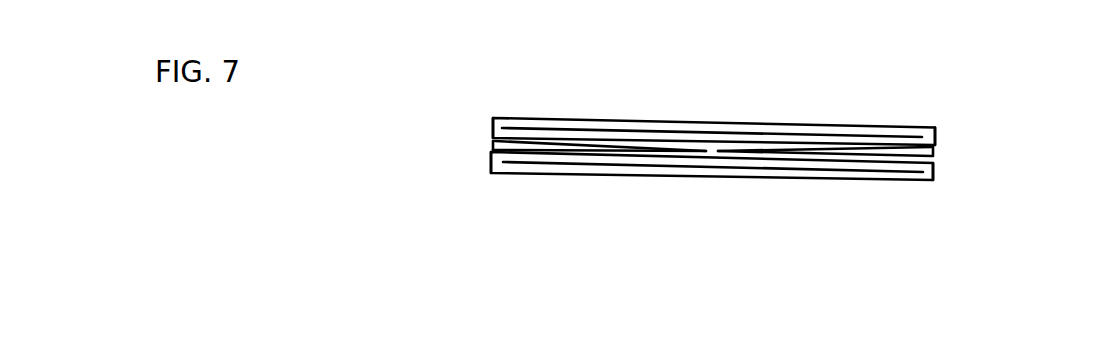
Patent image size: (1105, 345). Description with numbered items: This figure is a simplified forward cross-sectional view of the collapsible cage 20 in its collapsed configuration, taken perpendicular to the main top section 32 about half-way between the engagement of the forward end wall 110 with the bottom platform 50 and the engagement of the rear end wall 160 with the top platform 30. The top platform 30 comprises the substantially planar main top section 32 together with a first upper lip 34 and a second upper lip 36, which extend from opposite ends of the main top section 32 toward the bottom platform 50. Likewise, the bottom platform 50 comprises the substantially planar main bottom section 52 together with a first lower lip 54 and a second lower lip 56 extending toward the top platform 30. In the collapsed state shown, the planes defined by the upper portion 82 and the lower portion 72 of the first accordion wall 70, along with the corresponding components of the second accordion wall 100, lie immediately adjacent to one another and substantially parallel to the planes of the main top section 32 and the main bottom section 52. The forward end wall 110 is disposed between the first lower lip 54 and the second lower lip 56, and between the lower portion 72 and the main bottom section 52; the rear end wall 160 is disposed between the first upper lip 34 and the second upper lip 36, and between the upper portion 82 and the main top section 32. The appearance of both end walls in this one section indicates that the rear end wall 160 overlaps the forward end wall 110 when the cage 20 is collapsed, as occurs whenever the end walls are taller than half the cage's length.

The collapsible cage 20 is at (995, 89).
The top platform 30 is at (770, 119).
The main top section 32 is at (710, 121).
The first upper lip 34 is at (935, 131).
The second upper lip 36 is at (491, 120).
The bottom platform 50 is at (855, 180).
The main bottom section 52 is at (732, 176).
The first lower lip 54 is at (940, 170).
The second lower lip 56 is at (489, 163).
The first accordion wall 70 is at (876, 143).
The lower portion 72 is at (937, 155).
The upper portion 82 is at (937, 152).
The second accordion wall 100 is at (492, 147).
The forward end wall 110 is at (647, 167).
The rear end wall 160 is at (611, 129).